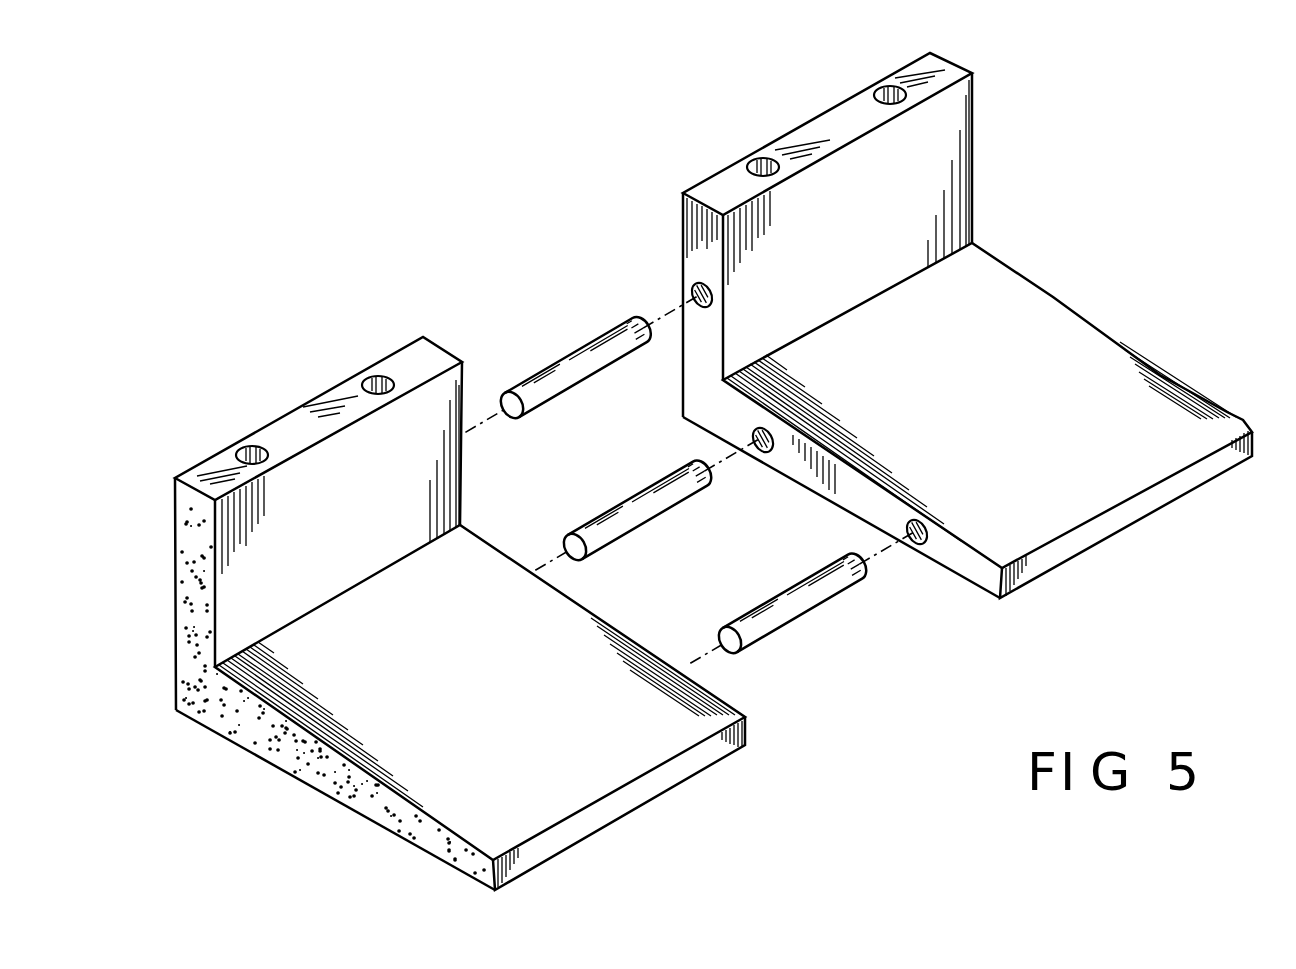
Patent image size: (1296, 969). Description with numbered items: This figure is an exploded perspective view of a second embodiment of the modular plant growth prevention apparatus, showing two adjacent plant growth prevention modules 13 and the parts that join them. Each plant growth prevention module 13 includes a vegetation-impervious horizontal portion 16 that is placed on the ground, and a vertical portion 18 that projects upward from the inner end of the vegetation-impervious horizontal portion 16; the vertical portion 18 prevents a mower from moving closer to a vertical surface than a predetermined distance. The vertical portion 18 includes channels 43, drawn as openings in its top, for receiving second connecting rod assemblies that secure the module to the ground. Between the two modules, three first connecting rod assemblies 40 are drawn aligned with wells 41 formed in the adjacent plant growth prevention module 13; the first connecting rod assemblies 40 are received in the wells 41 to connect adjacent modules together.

The plant growth prevention module 13 is at (1100, 190).
The vegetation-impervious horizontal portion 16 is at (547, 810).
The vertical portion 18 is at (290, 433).
The first connecting rod assembly 40 is at (545, 335).
The well 41 is at (762, 455).
The channel 43 is at (375, 377).